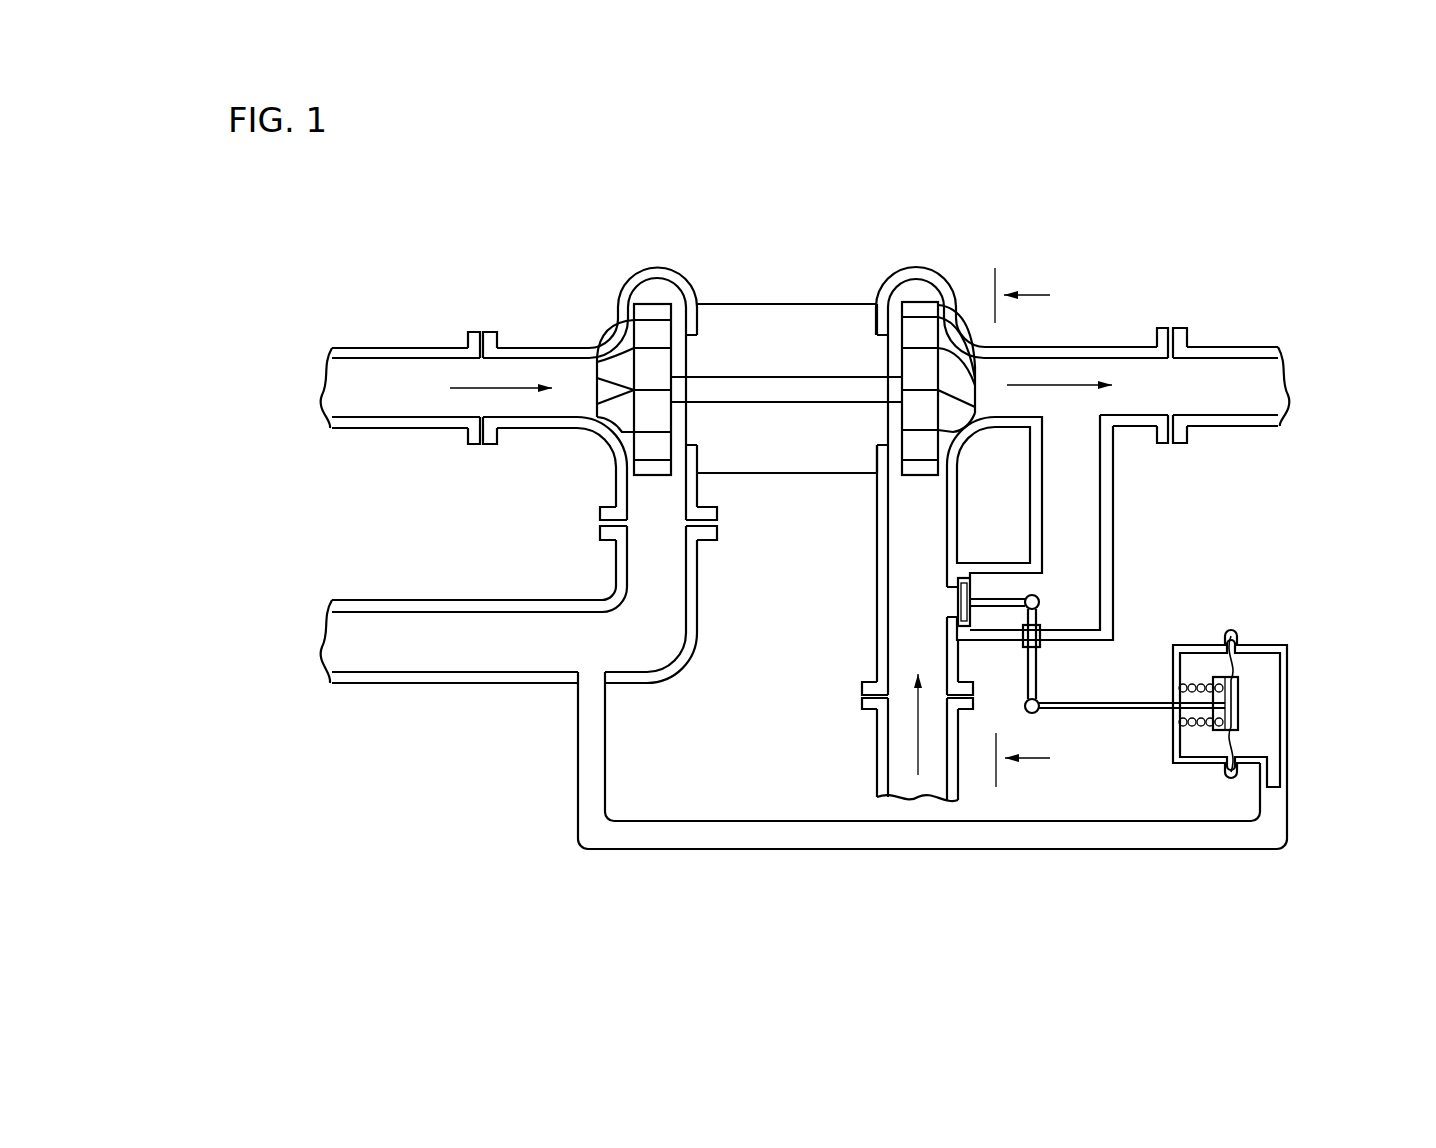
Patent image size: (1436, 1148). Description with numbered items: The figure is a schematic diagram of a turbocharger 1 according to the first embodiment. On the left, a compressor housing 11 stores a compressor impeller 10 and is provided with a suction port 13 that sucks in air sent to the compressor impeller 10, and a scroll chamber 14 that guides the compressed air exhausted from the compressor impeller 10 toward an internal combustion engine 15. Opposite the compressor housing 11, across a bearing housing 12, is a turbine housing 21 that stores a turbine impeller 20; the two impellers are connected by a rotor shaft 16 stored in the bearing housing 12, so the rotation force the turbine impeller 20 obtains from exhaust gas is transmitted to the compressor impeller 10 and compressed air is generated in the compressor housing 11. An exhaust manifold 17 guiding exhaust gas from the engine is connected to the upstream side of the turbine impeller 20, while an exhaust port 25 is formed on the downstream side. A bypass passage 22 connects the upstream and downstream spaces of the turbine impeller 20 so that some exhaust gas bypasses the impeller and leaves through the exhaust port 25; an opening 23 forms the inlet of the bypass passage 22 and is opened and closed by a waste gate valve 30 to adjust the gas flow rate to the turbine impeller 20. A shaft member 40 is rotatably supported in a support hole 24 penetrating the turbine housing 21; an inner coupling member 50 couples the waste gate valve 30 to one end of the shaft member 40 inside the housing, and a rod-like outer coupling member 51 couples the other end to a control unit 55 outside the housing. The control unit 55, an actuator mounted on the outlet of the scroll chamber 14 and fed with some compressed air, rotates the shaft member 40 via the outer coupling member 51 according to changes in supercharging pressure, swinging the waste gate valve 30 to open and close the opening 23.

The turbocharger 1 is at (1182, 188).
The compressor impeller 10 is at (630, 350).
The compressor housing 11 is at (596, 250).
The bearing housing 12 is at (764, 282).
The suction port 13 is at (348, 395).
The scroll chamber 14 is at (657, 287).
The internal combustion engine 15 is at (315, 643).
The rotor shaft 16 is at (806, 385).
The exhaust manifold 17 is at (933, 780).
The turbine impeller 20 is at (918, 333).
The turbine housing 21 is at (1021, 260).
The bypass passage 22 is at (1083, 533).
The opening 23 is at (946, 603).
The support hole 24 is at (1040, 630).
The exhaust port 25 is at (1255, 382).
The waste gate valve 30 is at (970, 585).
The shaft member 40 is at (1040, 677).
The inner coupling member 50 is at (1007, 603).
The outer coupling member 51 is at (1095, 700).
The control unit 55 is at (1257, 642).